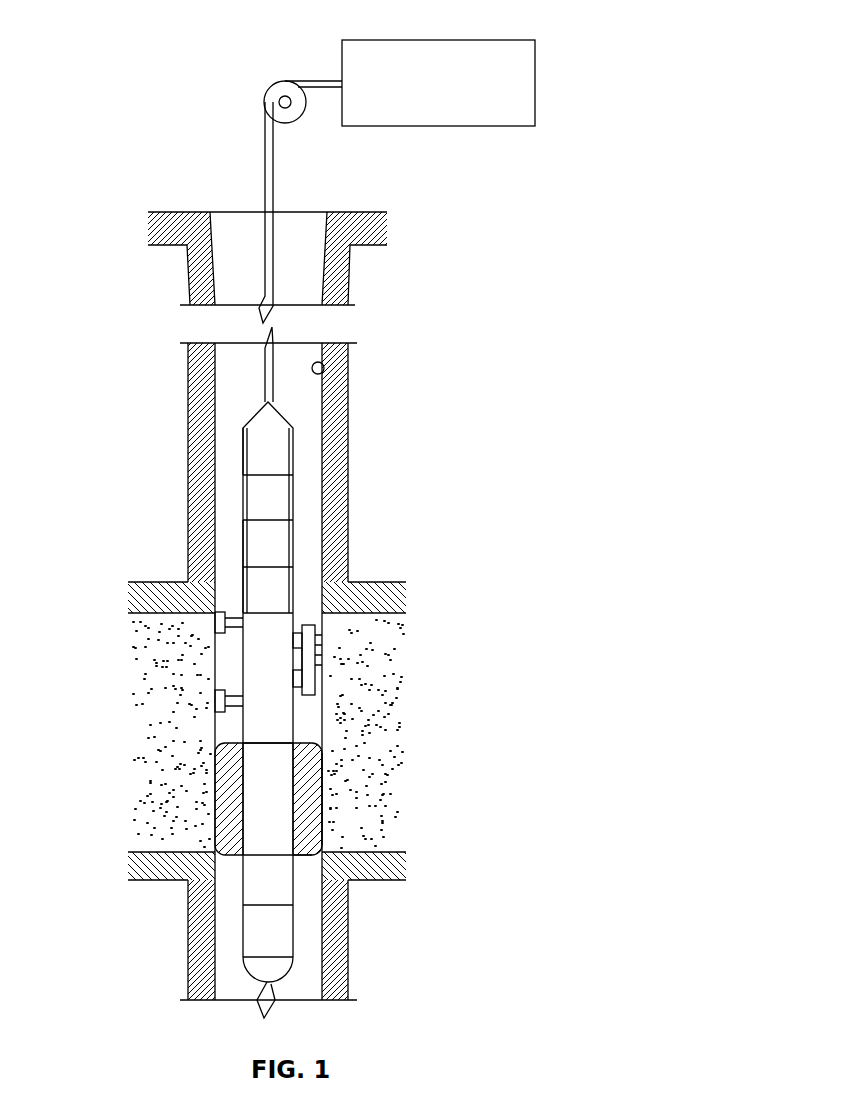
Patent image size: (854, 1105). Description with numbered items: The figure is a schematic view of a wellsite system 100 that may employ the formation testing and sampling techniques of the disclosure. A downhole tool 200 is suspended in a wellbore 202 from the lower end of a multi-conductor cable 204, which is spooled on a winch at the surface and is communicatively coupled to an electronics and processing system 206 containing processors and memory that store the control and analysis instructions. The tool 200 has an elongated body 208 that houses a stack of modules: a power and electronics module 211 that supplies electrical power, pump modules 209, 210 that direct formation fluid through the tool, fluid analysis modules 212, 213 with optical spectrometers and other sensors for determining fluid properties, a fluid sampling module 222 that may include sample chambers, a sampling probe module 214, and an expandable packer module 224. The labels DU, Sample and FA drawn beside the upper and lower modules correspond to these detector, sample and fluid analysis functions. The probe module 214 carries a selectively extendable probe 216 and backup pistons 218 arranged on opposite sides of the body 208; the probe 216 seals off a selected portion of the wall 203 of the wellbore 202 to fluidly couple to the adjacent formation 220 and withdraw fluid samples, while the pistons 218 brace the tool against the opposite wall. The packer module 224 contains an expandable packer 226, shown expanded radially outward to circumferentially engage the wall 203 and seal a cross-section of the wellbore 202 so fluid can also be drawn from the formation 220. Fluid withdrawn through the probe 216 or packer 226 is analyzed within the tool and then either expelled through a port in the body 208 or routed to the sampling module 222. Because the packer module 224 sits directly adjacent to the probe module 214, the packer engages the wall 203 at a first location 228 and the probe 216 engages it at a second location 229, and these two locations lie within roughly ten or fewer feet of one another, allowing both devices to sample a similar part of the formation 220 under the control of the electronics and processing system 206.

The wellsite system 100 is at (104, 62).
The downhole tool 200 is at (278, 692).
The wellbore 202 is at (234, 357).
The wall of the wellbore 203 is at (323, 372).
The multi-conductor cable 204 is at (260, 222).
The electronics and processing system 206 is at (505, 40).
The elongated body 208 is at (295, 463).
The pump module 209 is at (252, 941).
The pump module 210 is at (252, 508).
The power and electronics module 211 is at (252, 463).
The fluid analysis module 212 is at (252, 598).
The fluid analysis module 213 is at (252, 891).
The sampling probe module 214 is at (252, 684).
The extendable probe 216 is at (327, 657).
The backup pistons 218 is at (215, 705).
The formation 220 is at (405, 666).
The fluid sampling module 222 is at (252, 552).
The expandable packer module 224 is at (252, 799).
The expandable packer 226 is at (322, 778).
The first location 228 is at (330, 792).
The second location 229 is at (330, 662).
The detector unit DU is at (242, 497).
The sample chamber Sample is at (242, 538).
The fluid analyzer FA is at (242, 585).